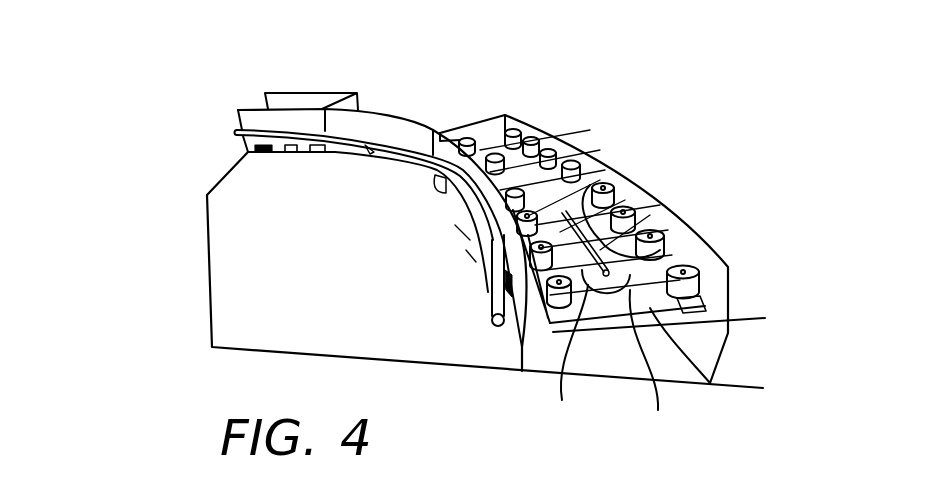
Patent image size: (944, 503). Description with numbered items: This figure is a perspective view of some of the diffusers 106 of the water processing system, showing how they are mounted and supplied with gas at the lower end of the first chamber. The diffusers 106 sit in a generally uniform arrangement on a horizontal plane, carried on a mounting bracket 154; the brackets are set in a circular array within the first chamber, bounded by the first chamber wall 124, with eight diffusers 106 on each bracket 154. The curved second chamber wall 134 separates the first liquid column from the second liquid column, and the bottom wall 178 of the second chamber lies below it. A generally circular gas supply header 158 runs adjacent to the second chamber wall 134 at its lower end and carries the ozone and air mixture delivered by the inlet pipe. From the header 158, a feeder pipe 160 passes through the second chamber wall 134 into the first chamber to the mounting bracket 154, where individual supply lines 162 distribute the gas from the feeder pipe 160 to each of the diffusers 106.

The diffuser 106 is at (660, 240).
The first chamber wall 124 is at (567, 135).
The second chamber wall 134 is at (401, 130).
The mounting bracket 154 is at (572, 163).
The gas supply header 158 is at (492, 292).
The feeder pipe 160 is at (588, 182).
The individual supply line 162 is at (626, 357).
The bottom wall 178 is at (236, 286).